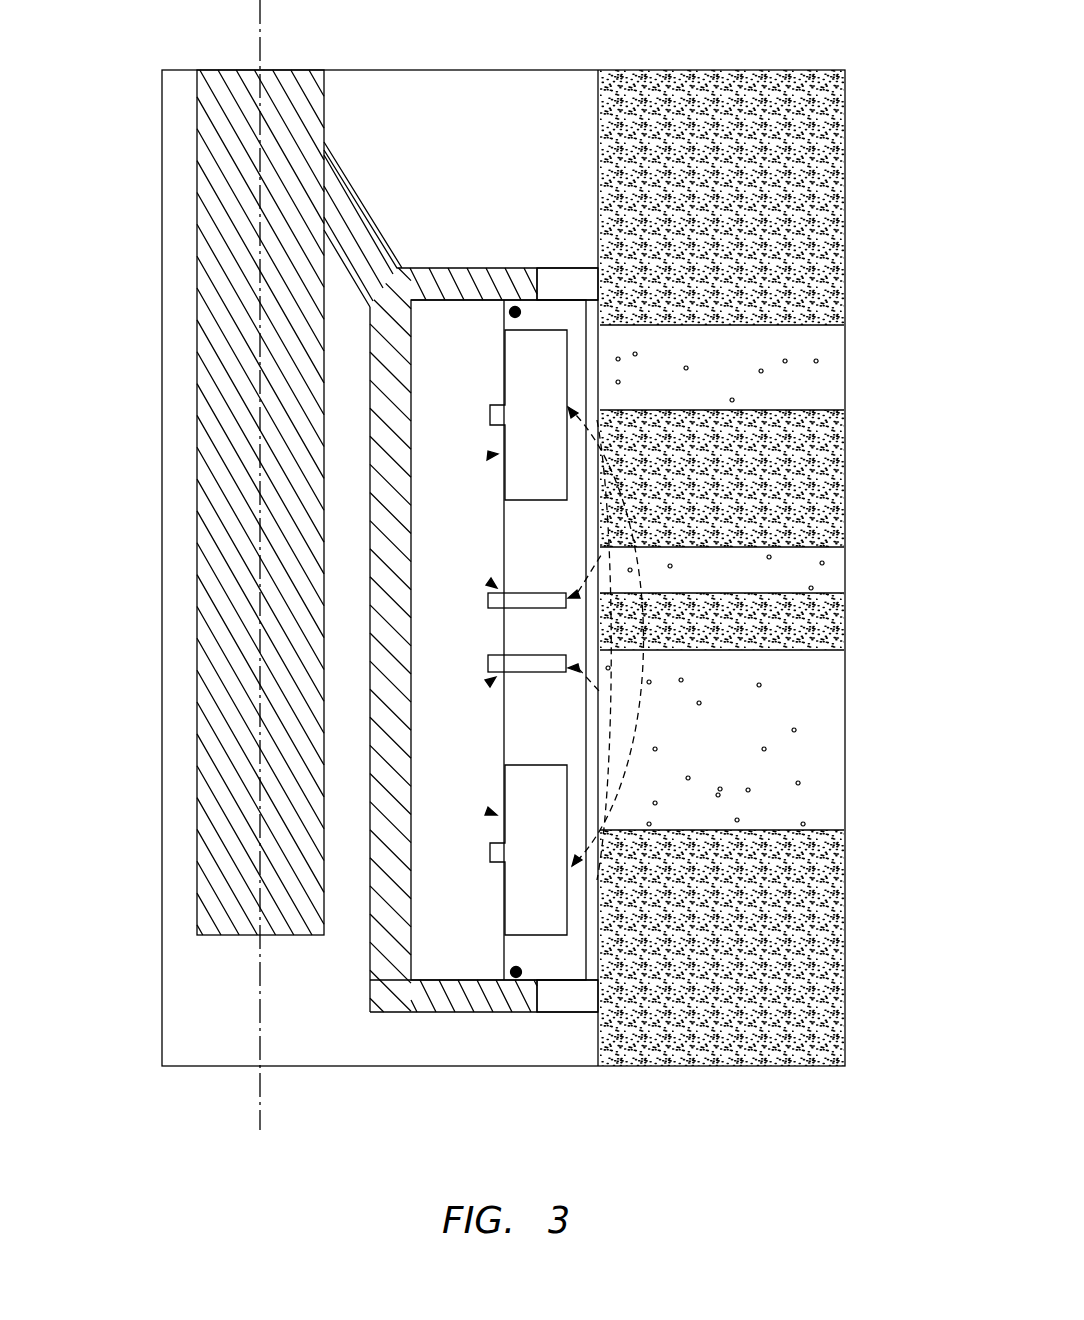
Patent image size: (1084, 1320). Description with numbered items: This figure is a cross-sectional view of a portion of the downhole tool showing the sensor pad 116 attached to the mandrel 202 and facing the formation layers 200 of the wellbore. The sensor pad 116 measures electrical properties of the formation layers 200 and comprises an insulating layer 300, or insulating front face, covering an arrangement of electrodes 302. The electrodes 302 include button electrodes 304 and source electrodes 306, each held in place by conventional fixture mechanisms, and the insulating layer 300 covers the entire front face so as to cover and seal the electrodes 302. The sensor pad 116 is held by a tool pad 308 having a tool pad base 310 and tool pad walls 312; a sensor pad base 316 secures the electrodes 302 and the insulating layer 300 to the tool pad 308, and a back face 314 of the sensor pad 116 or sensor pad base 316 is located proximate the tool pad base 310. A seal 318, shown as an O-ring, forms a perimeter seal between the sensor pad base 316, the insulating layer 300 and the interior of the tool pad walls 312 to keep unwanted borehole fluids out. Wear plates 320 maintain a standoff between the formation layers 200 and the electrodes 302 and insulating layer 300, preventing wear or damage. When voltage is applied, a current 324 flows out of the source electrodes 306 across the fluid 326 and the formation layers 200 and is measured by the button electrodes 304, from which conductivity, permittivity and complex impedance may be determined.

The sensor pad 116 is at (417, 945).
The formation layers 200 is at (741, 886).
The mandrel 202 is at (218, 575).
The insulating layer 300 is at (530, 307).
The electrodes 302 is at (498, 454).
The button electrodes 304 is at (523, 600).
The source electrodes 306 is at (523, 398).
The tool pad 308 is at (372, 960).
The tool pad base 310 is at (393, 737).
The tool pad walls 312 is at (450, 993).
The back face 314 is at (410, 652).
The sensor pad base 316 is at (463, 340).
The seal 318 is at (515, 307).
The wear plates 320 is at (588, 277).
The current 324 is at (605, 527).
The fluid 326 is at (590, 892).